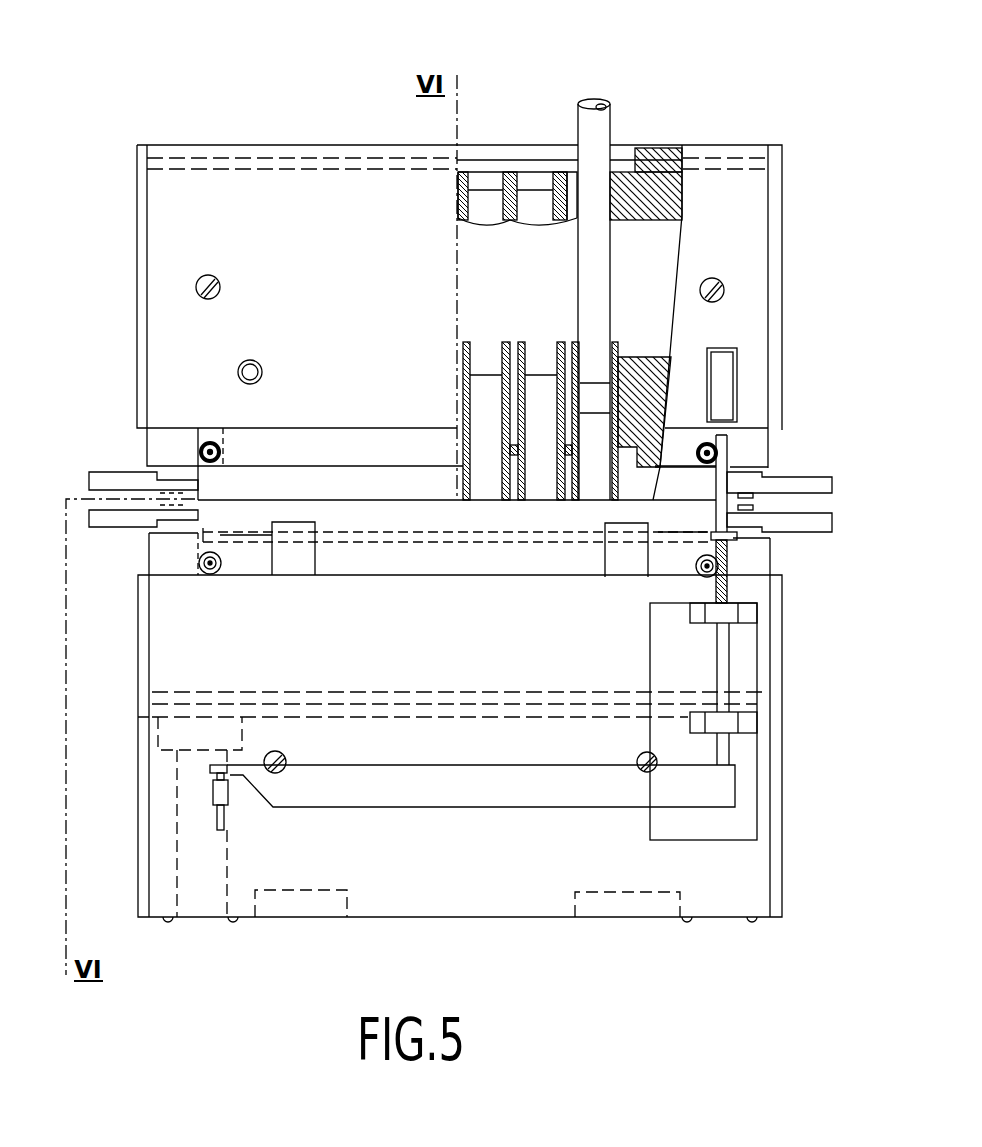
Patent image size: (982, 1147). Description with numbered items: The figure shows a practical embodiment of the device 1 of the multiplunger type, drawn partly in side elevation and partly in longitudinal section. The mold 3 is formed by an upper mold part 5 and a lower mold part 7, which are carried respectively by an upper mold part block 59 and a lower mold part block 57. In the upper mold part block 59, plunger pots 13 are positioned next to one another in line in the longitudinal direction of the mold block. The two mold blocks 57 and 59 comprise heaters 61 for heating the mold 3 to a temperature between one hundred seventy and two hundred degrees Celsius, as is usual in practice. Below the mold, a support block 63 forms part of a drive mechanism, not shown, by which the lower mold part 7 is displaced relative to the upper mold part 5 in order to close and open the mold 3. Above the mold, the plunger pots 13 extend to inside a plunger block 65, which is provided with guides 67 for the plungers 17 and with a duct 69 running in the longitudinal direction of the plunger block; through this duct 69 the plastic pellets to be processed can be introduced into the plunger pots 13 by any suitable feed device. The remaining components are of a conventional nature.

The device 1 is at (749, 82).
The mold 3 is at (242, 456).
The upper mold part 5 is at (820, 475).
The lower mold part 7 is at (818, 532).
The plunger pots 13 is at (560, 493).
The plungers 17 is at (610, 123).
The lower mold part block 57 is at (147, 556).
The upper mold part block 59 is at (147, 446).
The heaters 61 is at (210, 442).
The support block 63 is at (755, 887).
The plunger block 65 is at (775, 235).
The guides 67 is at (507, 190).
The duct 69 is at (655, 258).